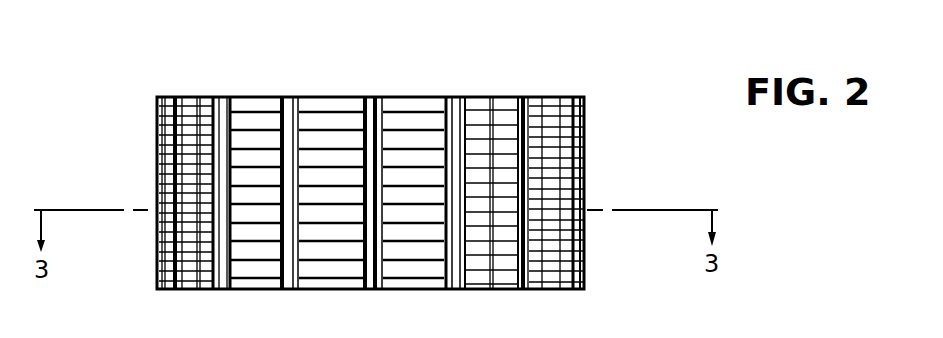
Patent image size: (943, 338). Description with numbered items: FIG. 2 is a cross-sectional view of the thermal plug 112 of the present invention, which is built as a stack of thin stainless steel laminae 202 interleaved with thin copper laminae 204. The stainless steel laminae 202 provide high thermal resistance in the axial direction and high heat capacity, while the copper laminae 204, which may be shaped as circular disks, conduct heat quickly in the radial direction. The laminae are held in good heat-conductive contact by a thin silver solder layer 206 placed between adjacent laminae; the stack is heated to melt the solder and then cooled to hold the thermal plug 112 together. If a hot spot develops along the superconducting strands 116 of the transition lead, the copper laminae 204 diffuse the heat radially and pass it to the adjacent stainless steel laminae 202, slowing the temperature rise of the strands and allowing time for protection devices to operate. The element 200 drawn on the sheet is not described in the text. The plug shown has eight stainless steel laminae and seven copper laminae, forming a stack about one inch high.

The thermal plug 112 is at (119, 86).
The superconducting strands 116 is at (283, 96).
The filter panel 200 is at (586, 250).
The stainless steel laminae 202 is at (157, 158).
The copper laminae 204 is at (586, 114).
The solder layer 206 is at (590, 187).